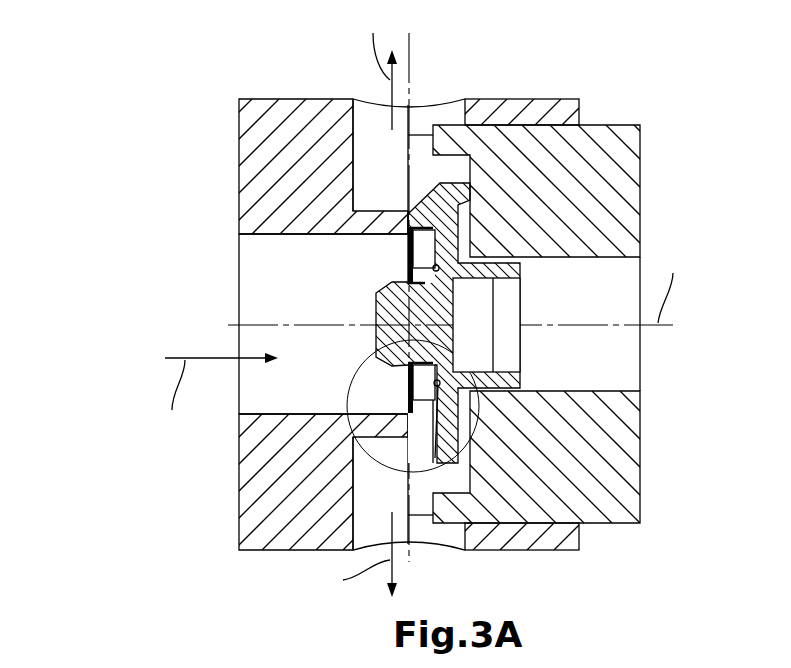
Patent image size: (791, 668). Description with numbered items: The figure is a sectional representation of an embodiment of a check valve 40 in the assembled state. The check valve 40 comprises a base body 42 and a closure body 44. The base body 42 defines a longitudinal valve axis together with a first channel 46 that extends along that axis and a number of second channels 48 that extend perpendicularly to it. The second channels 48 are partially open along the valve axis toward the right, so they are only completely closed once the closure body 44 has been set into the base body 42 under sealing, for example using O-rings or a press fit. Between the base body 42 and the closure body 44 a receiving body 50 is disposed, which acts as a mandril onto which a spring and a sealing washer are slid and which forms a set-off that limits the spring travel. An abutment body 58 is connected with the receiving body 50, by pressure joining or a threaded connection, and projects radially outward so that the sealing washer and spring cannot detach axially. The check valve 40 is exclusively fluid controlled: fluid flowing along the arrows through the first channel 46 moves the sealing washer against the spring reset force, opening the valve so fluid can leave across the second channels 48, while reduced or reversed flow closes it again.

The check valve 40 is at (110, 56).
The base body 42 is at (272, 103).
The closure body 44 is at (617, 130).
The first channel 46 is at (302, 276).
The second channels 48 is at (395, 176).
The receiving body 50 is at (520, 340).
The abutment body 58 is at (377, 300).